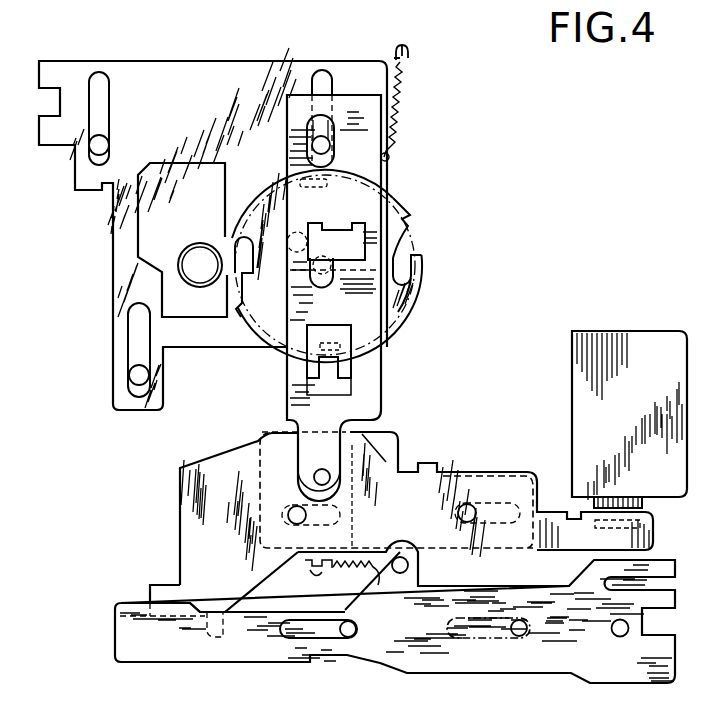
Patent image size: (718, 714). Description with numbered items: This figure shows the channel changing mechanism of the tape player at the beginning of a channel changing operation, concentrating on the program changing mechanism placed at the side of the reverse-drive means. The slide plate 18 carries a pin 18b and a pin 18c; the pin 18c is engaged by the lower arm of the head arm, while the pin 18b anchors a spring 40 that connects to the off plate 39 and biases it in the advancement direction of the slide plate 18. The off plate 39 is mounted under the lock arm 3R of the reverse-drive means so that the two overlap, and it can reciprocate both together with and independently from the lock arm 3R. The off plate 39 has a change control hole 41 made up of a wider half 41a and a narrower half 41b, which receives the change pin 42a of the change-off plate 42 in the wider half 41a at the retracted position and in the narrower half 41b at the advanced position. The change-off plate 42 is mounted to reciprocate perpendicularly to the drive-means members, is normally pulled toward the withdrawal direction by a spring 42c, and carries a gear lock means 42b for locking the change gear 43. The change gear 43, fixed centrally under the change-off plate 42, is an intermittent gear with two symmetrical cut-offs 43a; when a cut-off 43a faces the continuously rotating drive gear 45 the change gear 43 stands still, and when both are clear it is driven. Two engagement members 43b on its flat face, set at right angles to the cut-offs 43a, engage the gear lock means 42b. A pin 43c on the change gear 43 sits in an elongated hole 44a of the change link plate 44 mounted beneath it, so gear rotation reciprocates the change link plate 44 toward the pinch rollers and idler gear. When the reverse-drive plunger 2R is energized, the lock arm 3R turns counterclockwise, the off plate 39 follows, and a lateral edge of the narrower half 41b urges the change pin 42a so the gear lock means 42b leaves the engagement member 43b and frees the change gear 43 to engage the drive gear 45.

The slide plate 18 is at (161, 648).
The pin of the slide plate 18b is at (409, 566).
The pin of the slide plate 18c is at (620, 637).
The reverse-drive plunger 2R is at (585, 386).
The lock arm 3R is at (188, 490).
The off plate 39 is at (404, 432).
The spring 40 is at (362, 578).
The change control hole 41 is at (370, 440).
The wider half of the change control hole 41a is at (352, 487).
The narrower half of the change control hole 41b is at (312, 478).
The change-off plate 42 is at (382, 371).
The change pin 42a is at (300, 455).
The gear lock means 42b is at (300, 368).
The spring 42c is at (402, 98).
The change gear 43 is at (404, 208).
The cut-off 43a is at (399, 250).
The engagement member 43b is at (327, 184).
The pin of the change gear 43c is at (305, 262).
The change link plate 44 is at (266, 74).
The elongated hole 44a is at (288, 244).
The drive gear 45 is at (197, 246).